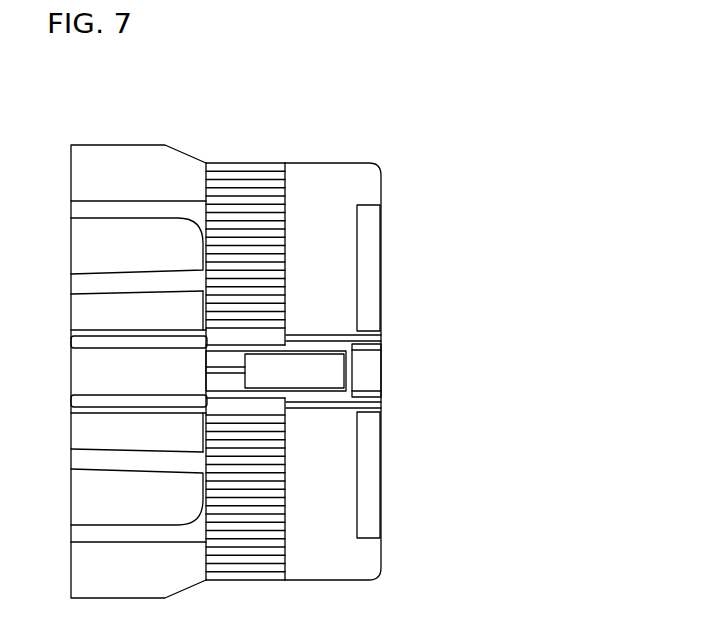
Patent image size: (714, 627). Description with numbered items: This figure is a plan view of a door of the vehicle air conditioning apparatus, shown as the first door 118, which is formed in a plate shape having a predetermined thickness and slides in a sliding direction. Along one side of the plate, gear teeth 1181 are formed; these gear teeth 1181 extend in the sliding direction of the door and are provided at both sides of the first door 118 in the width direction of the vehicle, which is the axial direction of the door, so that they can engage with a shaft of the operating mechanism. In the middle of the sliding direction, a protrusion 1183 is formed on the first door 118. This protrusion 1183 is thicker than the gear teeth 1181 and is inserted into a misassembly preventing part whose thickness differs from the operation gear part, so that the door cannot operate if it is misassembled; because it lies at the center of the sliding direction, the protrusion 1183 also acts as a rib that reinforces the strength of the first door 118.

The first door 118 is at (355, 177).
The gear teeth 1181 is at (246, 197).
The protrusion 1183 is at (263, 370).